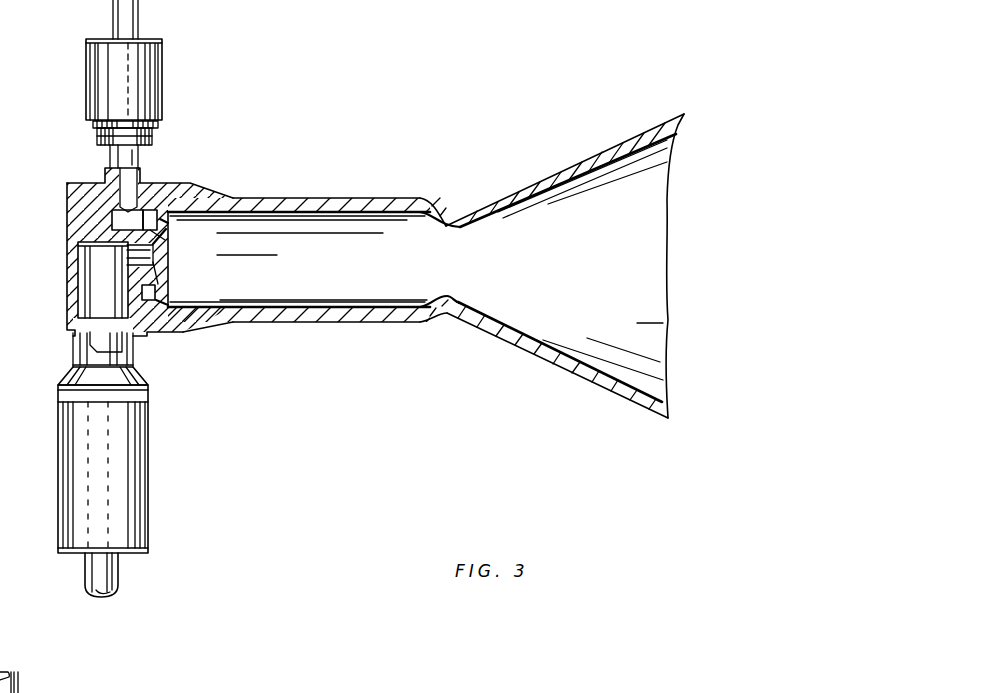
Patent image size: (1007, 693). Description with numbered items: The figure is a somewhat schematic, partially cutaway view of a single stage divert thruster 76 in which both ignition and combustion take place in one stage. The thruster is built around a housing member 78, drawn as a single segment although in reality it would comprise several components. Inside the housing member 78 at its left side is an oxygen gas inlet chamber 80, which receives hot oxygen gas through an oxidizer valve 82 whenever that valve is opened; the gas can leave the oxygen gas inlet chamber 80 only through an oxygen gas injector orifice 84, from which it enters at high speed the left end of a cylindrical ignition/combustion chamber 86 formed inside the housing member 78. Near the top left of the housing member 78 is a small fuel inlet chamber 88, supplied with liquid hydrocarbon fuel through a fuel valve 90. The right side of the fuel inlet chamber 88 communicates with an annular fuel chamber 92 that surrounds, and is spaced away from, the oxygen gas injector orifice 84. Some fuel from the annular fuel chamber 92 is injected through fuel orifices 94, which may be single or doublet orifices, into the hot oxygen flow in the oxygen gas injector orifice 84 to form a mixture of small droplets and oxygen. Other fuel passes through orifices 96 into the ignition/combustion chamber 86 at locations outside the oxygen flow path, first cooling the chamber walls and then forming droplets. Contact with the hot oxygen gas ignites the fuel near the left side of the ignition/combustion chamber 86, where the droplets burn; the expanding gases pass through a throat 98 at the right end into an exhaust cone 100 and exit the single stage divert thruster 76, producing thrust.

The single stage divert thruster 76 is at (354, 289).
The housing member 78 is at (305, 320).
The oxygen gas inlet chamber 80 is at (90, 298).
The oxidizer valve 82 is at (146, 485).
The oxygen gas injector orifice 84 is at (163, 258).
The ignition/combustion chamber 86 is at (324, 276).
The fuel inlet chamber 88 is at (122, 222).
The fuel valve 90 is at (162, 77).
The annular fuel chamber 92 is at (148, 210).
The fuel orifices 94 is at (128, 277).
The orifices 96 is at (168, 218).
The throat 98 is at (446, 316).
The exhaust cone 100 is at (620, 277).